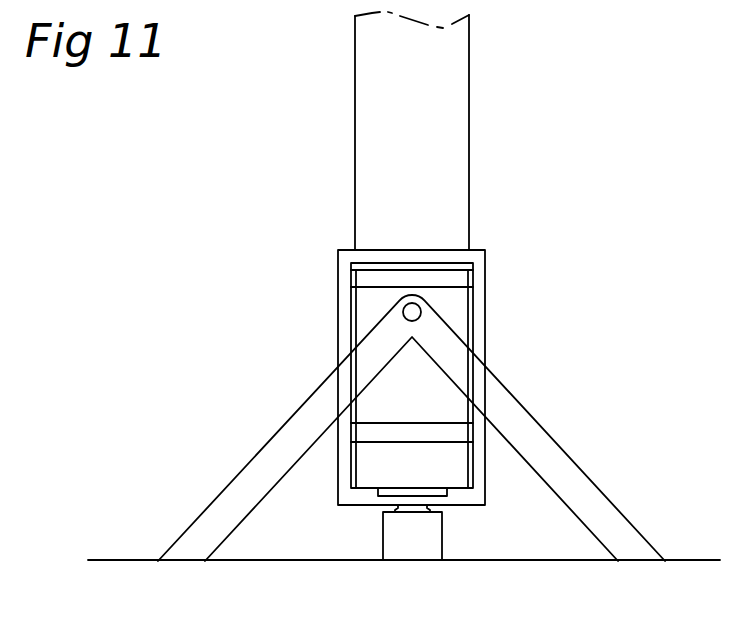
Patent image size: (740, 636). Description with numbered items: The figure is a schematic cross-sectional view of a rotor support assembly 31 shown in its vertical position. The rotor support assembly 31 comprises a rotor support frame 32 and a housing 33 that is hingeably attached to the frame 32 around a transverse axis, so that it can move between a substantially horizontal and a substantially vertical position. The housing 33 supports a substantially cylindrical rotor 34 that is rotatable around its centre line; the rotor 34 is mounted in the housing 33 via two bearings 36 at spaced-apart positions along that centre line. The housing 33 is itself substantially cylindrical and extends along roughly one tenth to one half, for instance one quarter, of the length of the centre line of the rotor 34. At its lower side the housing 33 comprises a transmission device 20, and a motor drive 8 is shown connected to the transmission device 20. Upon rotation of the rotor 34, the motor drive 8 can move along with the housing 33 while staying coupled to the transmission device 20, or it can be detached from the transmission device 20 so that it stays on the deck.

The motor drive 8 is at (412, 543).
The transmission device 20 is at (397, 506).
The rotor support assembly 31 is at (336, 92).
The rotor support frame 32 is at (572, 473).
The housing 33 is at (475, 315).
The rotor 34 is at (457, 147).
The bearings 36 is at (383, 433).